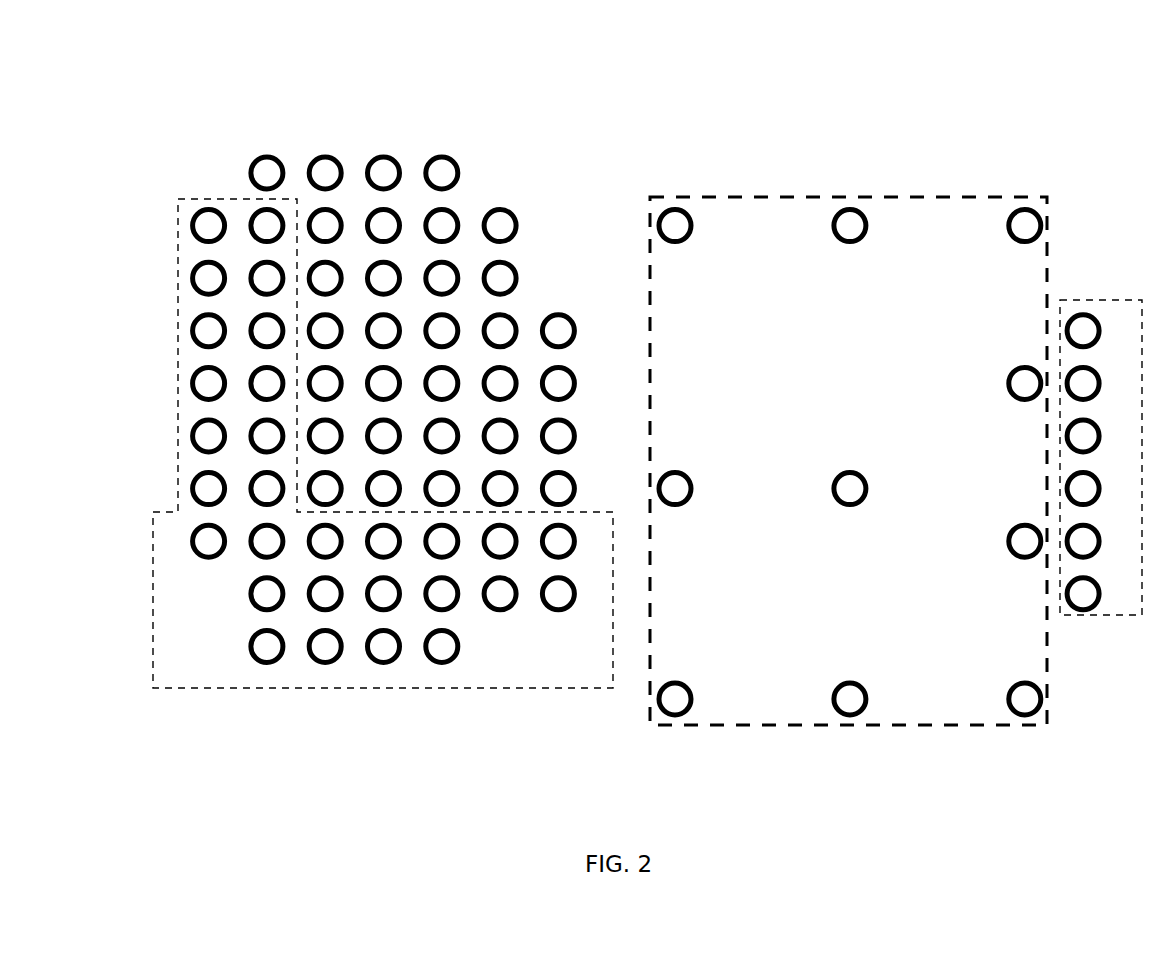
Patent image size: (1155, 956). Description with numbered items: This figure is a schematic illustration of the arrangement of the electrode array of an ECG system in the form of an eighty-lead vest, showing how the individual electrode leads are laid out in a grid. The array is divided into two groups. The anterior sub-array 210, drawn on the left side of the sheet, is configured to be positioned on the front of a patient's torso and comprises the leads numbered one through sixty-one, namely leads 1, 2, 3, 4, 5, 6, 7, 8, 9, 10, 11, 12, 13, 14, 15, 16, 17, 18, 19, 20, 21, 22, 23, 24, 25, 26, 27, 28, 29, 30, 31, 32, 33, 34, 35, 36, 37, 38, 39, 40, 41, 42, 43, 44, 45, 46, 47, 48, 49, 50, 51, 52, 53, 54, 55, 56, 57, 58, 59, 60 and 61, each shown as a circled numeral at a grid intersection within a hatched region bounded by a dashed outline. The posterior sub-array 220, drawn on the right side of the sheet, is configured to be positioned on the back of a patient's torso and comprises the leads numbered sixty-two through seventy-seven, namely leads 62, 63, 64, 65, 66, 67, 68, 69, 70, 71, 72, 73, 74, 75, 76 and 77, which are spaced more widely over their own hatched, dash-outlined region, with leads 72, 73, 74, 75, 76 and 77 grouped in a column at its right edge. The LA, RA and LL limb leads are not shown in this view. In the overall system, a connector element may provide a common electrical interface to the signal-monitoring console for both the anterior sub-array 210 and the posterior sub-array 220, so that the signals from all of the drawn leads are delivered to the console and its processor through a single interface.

The anterior sub-array 210 is at (349, 117).
The posterior sub-array 220 is at (840, 118).
The lead 1 is at (209, 226).
The lead 2 is at (209, 278).
The lead 3 is at (209, 331).
The lead 4 is at (209, 383).
The lead 5 is at (209, 436).
The lead 6 is at (209, 489).
The lead 7 is at (209, 541).
The lead 8 is at (267, 173).
The lead 9 is at (267, 226).
The lead 10 is at (267, 278).
The lead 11 is at (267, 331).
The lead 12 is at (267, 383).
The lead 13 is at (267, 436).
The lead 14 is at (267, 489).
The lead 15 is at (267, 541).
The lead 16 is at (267, 594).
The lead 17 is at (267, 646).
The lead 18 is at (325, 173).
The lead 19 is at (325, 226).
The lead 20 is at (325, 278).
The lead 21 is at (325, 331).
The lead 22 is at (325, 383).
The lead 23 is at (325, 436).
The lead 24 is at (325, 489).
The lead 25 is at (325, 541).
The lead 26 is at (325, 594).
The lead 27 is at (325, 646).
The lead 28 is at (384, 173).
The lead 29 is at (384, 226).
The lead 30 is at (384, 278).
The lead 31 is at (384, 331).
The lead 32 is at (384, 383).
The lead 33 is at (384, 436).
The lead 34 is at (384, 489).
The lead 35 is at (384, 541).
The lead 36 is at (384, 594).
The lead 37 is at (384, 646).
The lead 38 is at (442, 173).
The lead 39 is at (442, 226).
The lead 40 is at (442, 278).
The lead 41 is at (442, 331).
The lead 42 is at (442, 383).
The lead 43 is at (442, 436).
The lead 44 is at (442, 489).
The lead 45 is at (442, 541).
The lead 46 is at (442, 594).
The lead 47 is at (442, 646).
The lead 48 is at (500, 226).
The lead 49 is at (500, 278).
The lead 50 is at (500, 331).
The lead 51 is at (500, 383).
The lead 52 is at (500, 436).
The lead 53 is at (500, 489).
The lead 54 is at (500, 541).
The lead 55 is at (500, 594).
The lead 56 is at (558, 331).
The lead 57 is at (558, 383).
The lead 58 is at (558, 436).
The lead 59 is at (558, 489).
The lead 60 is at (558, 541).
The lead 61 is at (558, 594).
The lead 62 is at (675, 699).
The lead 63 is at (675, 489).
The lead 64 is at (675, 226).
The lead 65 is at (850, 699).
The lead 66 is at (850, 489).
The lead 67 is at (850, 226).
The lead 68 is at (1025, 699).
The lead 69 is at (1025, 541).
The lead 70 is at (1025, 383).
The lead 71 is at (1025, 226).
The lead 72 is at (1083, 594).
The lead 73 is at (1083, 541).
The lead 74 is at (1083, 489).
The lead 75 is at (1083, 436).
The lead 76 is at (1083, 383).
The lead 77 is at (1083, 331).